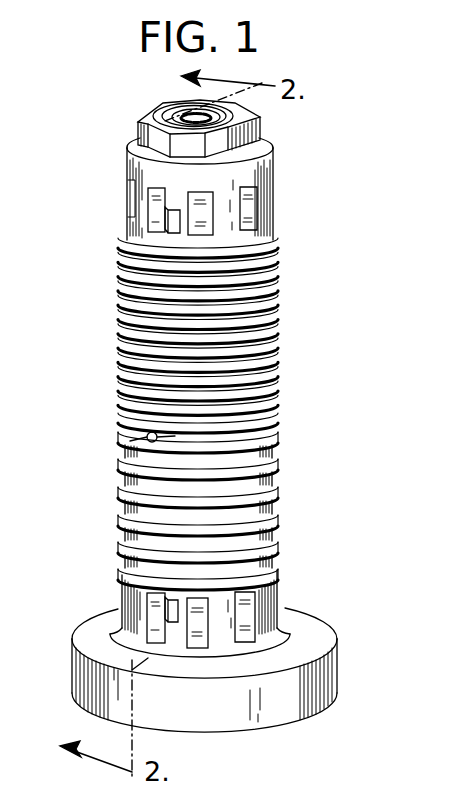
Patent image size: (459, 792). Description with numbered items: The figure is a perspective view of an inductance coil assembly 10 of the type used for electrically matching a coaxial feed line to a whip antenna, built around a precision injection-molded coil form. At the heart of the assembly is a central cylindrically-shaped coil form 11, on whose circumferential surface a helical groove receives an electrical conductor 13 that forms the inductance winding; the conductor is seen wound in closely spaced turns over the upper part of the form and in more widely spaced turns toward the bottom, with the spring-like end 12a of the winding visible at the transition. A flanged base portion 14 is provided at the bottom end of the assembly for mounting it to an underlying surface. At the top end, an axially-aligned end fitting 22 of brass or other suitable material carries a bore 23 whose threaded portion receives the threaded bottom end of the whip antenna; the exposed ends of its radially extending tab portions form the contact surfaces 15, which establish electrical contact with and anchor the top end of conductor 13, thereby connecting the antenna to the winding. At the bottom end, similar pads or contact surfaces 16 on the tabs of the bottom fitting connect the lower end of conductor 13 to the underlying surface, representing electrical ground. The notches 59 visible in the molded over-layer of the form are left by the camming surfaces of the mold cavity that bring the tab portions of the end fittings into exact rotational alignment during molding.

The inductance coil assembly 10 is at (223, 179).
The coil form 11 is at (252, 442).
The spring end 12a is at (120, 460).
The electrical conductor 13 is at (278, 473).
The flanged base portion 14 is at (92, 620).
The contact surfaces 15 is at (253, 207).
The contact surfaces 16 is at (248, 610).
The end fitting 22 is at (163, 115).
The bore 23 is at (177, 113).
The notches 59 is at (172, 221).